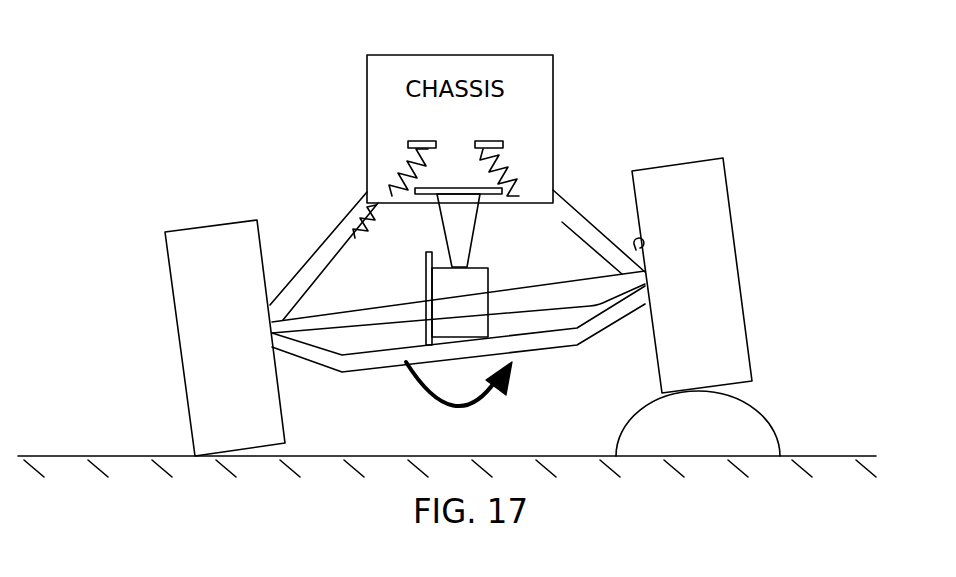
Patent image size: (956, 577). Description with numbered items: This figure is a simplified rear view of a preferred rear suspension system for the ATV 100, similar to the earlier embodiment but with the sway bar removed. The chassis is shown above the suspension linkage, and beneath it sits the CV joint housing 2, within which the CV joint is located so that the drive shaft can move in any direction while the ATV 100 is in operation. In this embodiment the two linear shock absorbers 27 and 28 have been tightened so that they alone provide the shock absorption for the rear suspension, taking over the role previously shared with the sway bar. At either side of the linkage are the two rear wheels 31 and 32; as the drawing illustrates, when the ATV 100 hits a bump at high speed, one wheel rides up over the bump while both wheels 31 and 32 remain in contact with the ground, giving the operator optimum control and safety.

The ATV 100 is at (427, 225).
The CV joint housing 2 is at (475, 293).
The linear shock absorber 27 is at (513, 173).
The linear shock absorber 28 is at (362, 223).
The wheel 31 is at (726, 219).
The wheel 32 is at (197, 232).